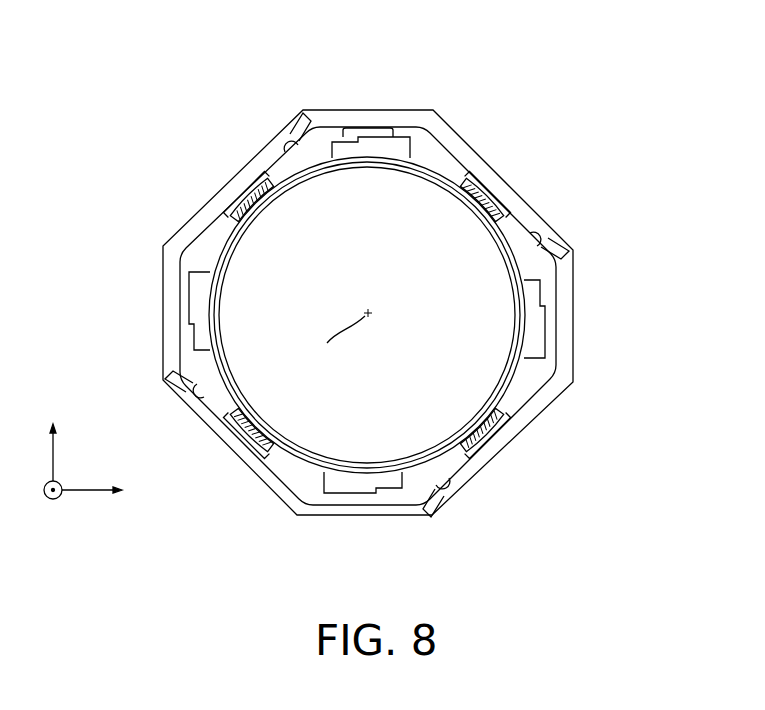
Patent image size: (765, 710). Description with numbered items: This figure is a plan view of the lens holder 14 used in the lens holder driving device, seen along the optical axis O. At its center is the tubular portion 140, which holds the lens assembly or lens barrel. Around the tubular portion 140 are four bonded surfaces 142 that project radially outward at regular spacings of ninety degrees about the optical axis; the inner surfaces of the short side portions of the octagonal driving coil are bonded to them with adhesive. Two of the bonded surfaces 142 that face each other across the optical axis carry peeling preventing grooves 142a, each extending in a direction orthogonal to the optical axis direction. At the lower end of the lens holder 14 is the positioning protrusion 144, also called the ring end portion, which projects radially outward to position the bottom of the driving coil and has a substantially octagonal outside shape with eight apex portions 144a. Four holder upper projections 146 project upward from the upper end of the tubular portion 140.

The lens holder 14 is at (152, 160).
The tubular portion 140 is at (515, 228).
The bonded surfaces 142 is at (331, 128).
The peeling preventing grooves 142a is at (376, 128).
The positioning protrusion 144 is at (560, 343).
The apex portions 144a is at (303, 110).
The holder upper projections 146 is at (240, 177).